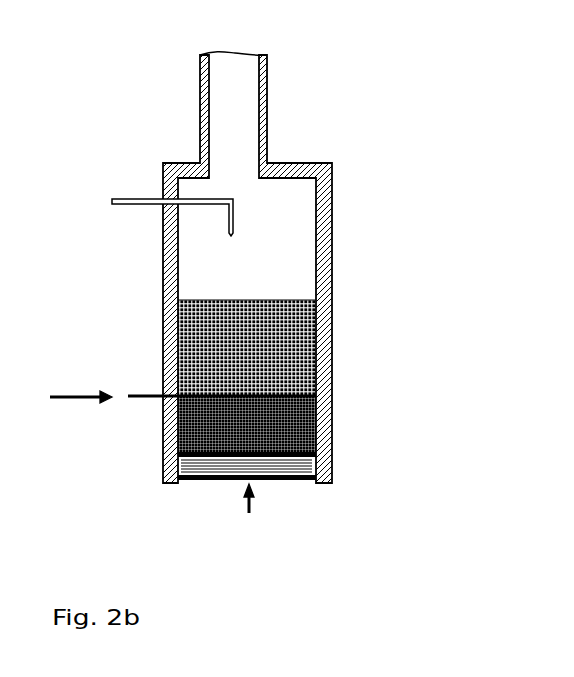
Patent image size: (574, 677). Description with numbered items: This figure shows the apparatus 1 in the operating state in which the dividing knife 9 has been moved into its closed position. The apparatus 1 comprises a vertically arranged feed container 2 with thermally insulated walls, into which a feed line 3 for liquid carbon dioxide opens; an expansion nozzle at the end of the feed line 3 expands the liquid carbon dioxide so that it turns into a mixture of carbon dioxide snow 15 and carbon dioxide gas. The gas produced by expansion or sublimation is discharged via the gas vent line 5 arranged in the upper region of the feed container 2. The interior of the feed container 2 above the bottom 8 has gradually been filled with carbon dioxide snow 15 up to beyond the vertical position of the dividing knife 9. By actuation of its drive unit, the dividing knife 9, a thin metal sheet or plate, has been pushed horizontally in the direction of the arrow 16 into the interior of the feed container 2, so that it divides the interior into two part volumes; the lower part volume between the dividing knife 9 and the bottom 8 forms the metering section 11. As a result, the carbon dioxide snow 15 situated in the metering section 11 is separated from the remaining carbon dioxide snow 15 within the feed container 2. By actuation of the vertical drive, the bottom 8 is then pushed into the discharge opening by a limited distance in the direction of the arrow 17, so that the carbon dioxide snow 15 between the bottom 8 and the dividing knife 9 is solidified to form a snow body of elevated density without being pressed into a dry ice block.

The apparatus 1 is at (88, 113).
The feed container 2 is at (342, 257).
The feed line 3 is at (135, 205).
The gas vent line 5 is at (267, 73).
The bottom 8 is at (292, 463).
The dividing knife 9 is at (143, 394).
The metering section 11 is at (278, 424).
The carbon dioxide snow 15 is at (192, 328).
The arrow 16 is at (86, 399).
The arrow 17 is at (248, 503).